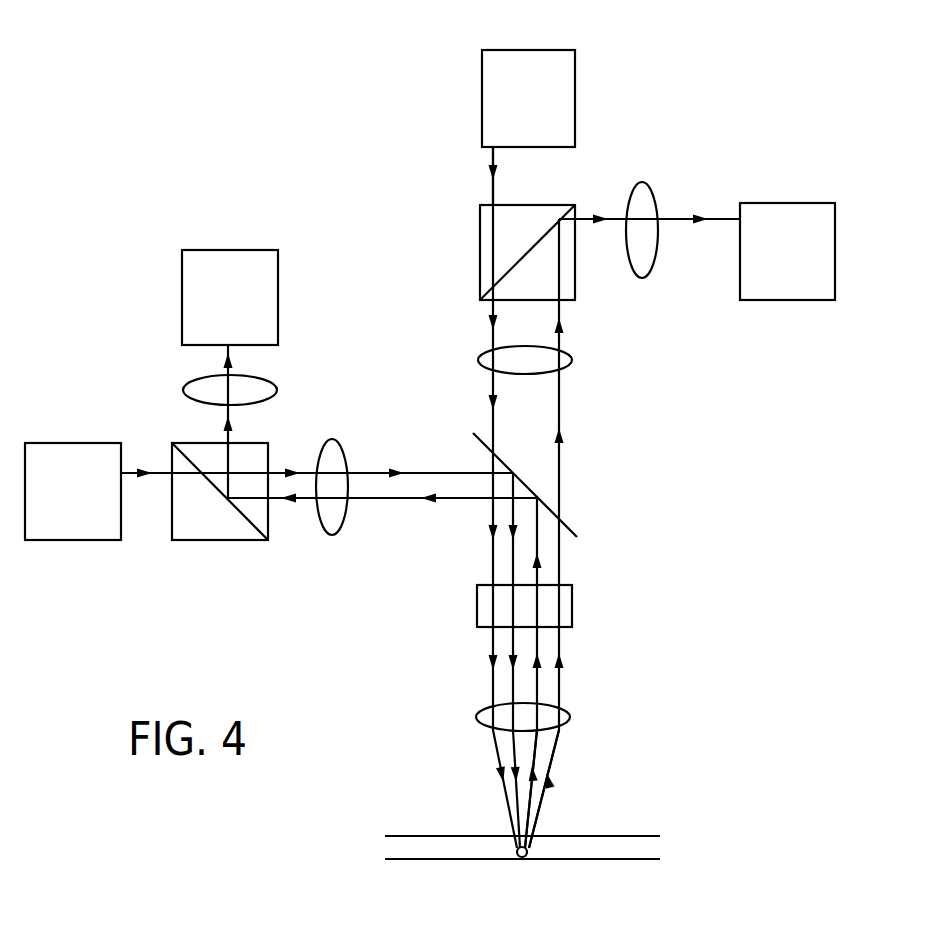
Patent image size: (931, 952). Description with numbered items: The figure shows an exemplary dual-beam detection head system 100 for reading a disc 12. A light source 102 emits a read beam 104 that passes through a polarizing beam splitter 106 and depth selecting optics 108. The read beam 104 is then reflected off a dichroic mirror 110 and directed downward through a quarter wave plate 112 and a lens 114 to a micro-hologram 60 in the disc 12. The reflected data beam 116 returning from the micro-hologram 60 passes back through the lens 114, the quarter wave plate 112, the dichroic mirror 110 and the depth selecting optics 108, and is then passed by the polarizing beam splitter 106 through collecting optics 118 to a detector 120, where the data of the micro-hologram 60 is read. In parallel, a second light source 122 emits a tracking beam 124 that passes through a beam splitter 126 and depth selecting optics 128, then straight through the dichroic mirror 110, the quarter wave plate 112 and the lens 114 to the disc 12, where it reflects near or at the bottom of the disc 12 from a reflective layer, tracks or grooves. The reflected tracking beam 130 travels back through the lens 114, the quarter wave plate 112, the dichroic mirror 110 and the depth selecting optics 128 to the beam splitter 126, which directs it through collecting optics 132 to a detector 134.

The dual-beam detection head system 100 is at (256, 44).
The light source 102 is at (88, 540).
The read beam 104 is at (160, 478).
The polarizing beam splitter 106 is at (220, 540).
The depth selecting optics 108 is at (333, 440).
The dichroic mirror 110 is at (548, 504).
The quarter wave plate 112 is at (572, 602).
The lens 114 is at (566, 714).
The reflected data beam 116 is at (535, 760).
The collecting optics 118 is at (183, 393).
The detector 120 is at (278, 293).
The light source 122 is at (575, 97).
The tracking beam 124 is at (494, 192).
The beam splitter 126 is at (480, 256).
The depth selecting optics 128 is at (571, 357).
The reflected tracking beam 130 is at (540, 806).
The collecting optics 132 is at (644, 182).
The detector 134 is at (790, 203).
The disc 12 is at (645, 846).
The micro-hologram 60 is at (525, 862).